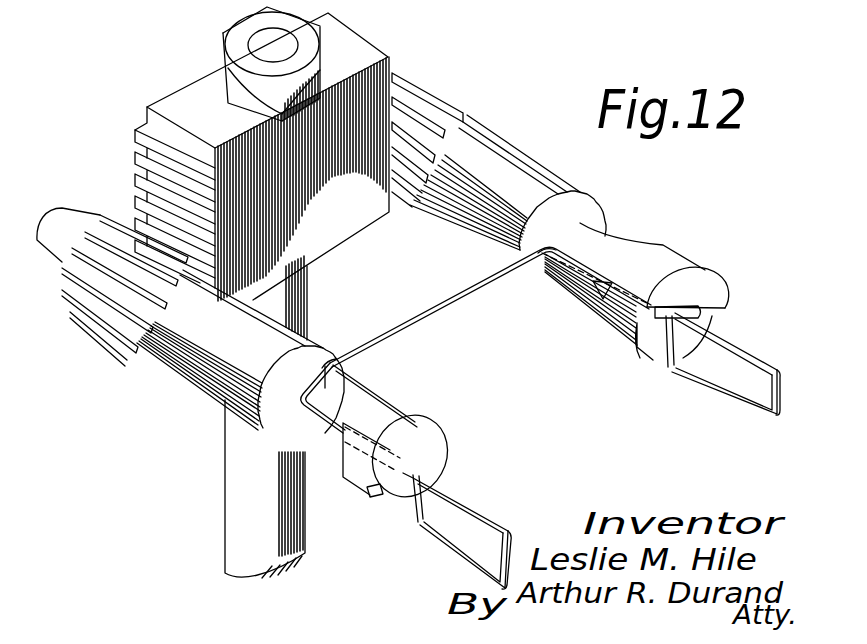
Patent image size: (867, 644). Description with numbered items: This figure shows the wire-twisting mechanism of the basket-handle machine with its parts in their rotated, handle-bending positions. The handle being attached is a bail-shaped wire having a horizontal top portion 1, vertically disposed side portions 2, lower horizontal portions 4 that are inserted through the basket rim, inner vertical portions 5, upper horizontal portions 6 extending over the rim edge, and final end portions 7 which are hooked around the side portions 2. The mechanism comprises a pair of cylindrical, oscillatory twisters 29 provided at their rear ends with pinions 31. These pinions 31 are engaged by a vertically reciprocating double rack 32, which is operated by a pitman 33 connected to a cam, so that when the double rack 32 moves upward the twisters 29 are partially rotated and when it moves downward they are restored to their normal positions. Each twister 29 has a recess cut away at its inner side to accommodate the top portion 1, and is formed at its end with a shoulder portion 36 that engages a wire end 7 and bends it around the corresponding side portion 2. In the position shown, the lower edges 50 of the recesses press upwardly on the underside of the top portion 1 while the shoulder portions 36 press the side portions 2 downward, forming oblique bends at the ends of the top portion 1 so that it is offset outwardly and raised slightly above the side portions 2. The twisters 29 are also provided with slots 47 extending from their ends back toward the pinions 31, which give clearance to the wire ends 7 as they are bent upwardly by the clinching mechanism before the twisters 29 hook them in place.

The horizontal top portion 1 is at (437, 312).
The side portions 2 is at (460, 503).
The lower horizontal portions 4 is at (505, 553).
The inner vertical portions 5 is at (453, 555).
The upper horizontal portions 6 is at (417, 497).
The end portions 7 is at (378, 497).
The twisters 29 is at (187, 360).
The pinions 31 is at (98, 328).
The double rack 32 is at (360, 225).
The pitman 33 is at (253, 488).
The shoulder portions 36 is at (417, 450).
The slots 47 is at (620, 298).
The lower edges 50 is at (340, 363).